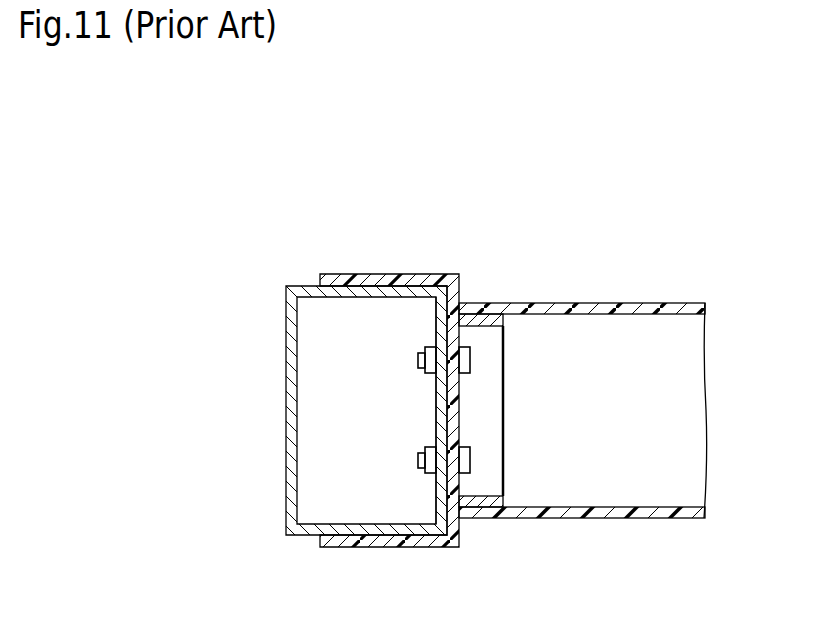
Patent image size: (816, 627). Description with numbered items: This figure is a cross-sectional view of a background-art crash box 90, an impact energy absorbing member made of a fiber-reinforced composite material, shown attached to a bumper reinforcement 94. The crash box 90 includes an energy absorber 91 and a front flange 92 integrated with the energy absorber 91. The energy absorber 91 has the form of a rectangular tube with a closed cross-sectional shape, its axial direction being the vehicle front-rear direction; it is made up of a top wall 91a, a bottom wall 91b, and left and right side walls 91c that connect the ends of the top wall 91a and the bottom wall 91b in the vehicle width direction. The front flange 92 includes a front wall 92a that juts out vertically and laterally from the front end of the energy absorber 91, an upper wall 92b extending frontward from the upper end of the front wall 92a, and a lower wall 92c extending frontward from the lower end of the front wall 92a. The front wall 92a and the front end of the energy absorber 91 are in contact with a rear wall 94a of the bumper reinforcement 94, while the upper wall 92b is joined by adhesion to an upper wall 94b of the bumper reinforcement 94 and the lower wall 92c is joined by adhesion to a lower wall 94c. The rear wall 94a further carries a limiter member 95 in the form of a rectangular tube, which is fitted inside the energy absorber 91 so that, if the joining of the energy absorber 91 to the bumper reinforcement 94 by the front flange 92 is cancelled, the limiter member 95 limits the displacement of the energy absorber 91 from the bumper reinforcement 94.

The crash box 90 is at (617, 412).
The energy absorber 91 is at (558, 303).
The top wall 91a is at (612, 303).
The bottom wall 91b is at (578, 520).
The side wall 91c is at (690, 447).
The front flange 92 is at (425, 408).
The front wall 92a is at (463, 292).
The upper wall 92b is at (378, 277).
The lower wall 92c is at (365, 543).
The bumper reinforcement 94 is at (364, 394).
The rear wall 94a is at (436, 325).
The upper wall 94b is at (340, 292).
The lower wall 94c is at (417, 537).
The limiter member 95 is at (505, 320).